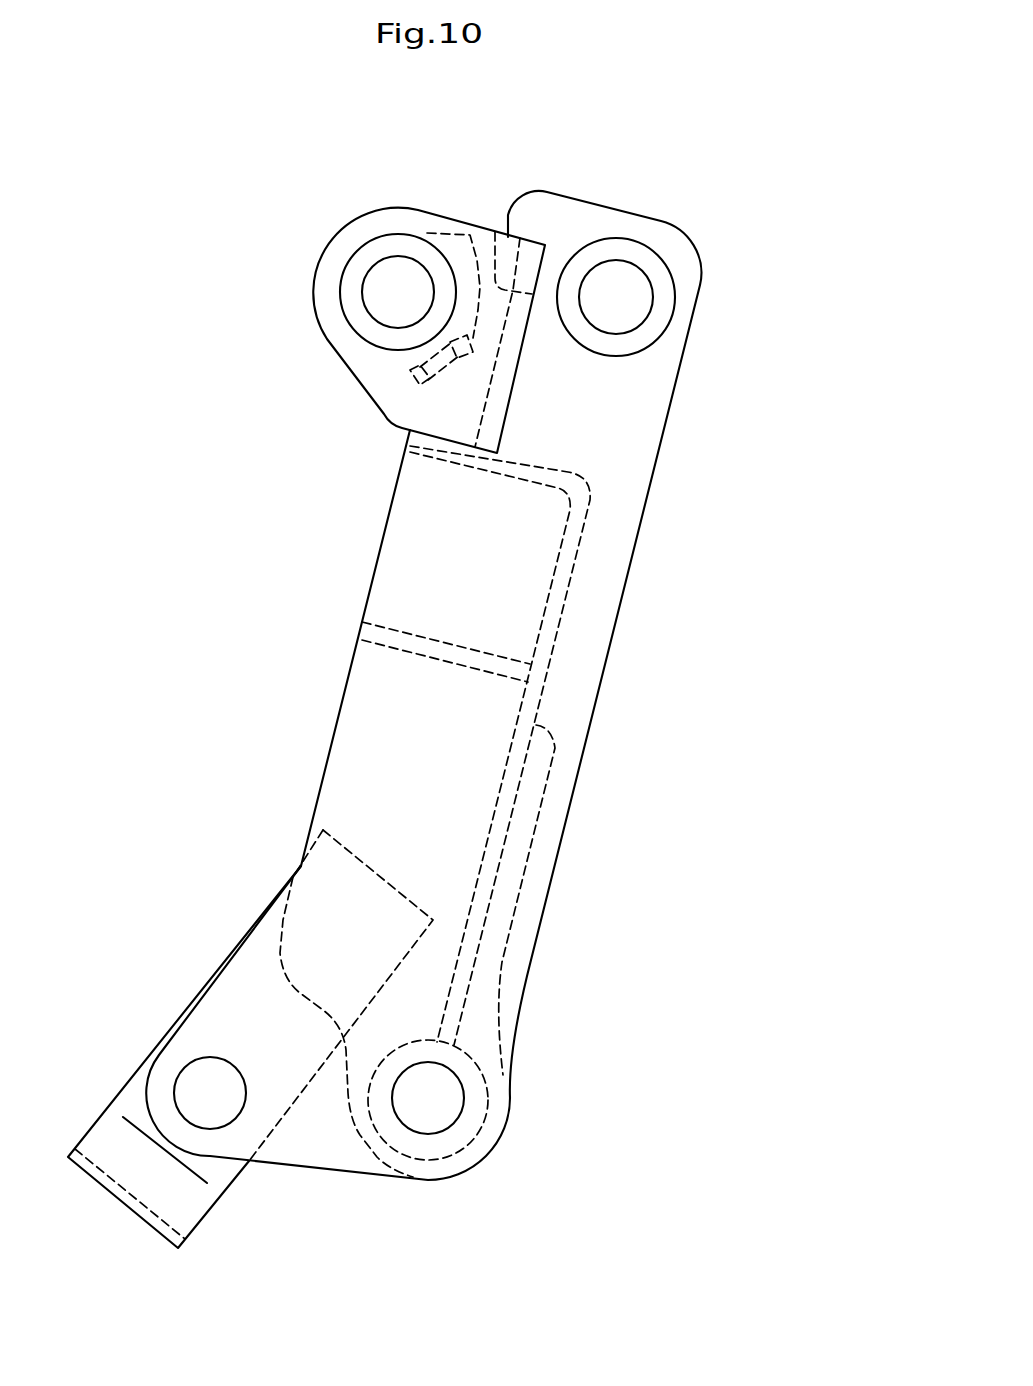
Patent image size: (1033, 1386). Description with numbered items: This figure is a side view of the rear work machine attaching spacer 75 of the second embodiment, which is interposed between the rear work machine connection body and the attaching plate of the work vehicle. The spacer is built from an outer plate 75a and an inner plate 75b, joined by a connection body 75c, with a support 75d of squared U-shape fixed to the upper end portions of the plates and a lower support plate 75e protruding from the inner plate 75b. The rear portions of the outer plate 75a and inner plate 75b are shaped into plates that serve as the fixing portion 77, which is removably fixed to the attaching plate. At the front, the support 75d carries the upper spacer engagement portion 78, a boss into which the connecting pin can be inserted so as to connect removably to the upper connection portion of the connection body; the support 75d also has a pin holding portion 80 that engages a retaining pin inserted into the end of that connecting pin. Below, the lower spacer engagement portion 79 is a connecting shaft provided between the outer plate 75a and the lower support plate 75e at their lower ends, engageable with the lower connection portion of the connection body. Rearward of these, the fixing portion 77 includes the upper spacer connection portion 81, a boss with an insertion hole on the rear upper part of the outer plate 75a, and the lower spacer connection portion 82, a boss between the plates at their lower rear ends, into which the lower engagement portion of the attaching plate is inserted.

The rear work machine attaching spacer 75 is at (718, 222).
The outer plate 75a is at (350, 743).
The inner plate 75b is at (287, 960).
The connection body 75c is at (577, 557).
The support 75d is at (487, 243).
The lower support plate 75e is at (190, 993).
The fixing portion 77 is at (577, 670).
The upper spacer engagement portion 78 is at (392, 250).
The lower spacer engagement portion 79 is at (177, 1094).
The pin holding portion 80 is at (407, 365).
The upper spacer connection portion 81 is at (628, 247).
The lower spacer connection portion 82 is at (430, 1130).